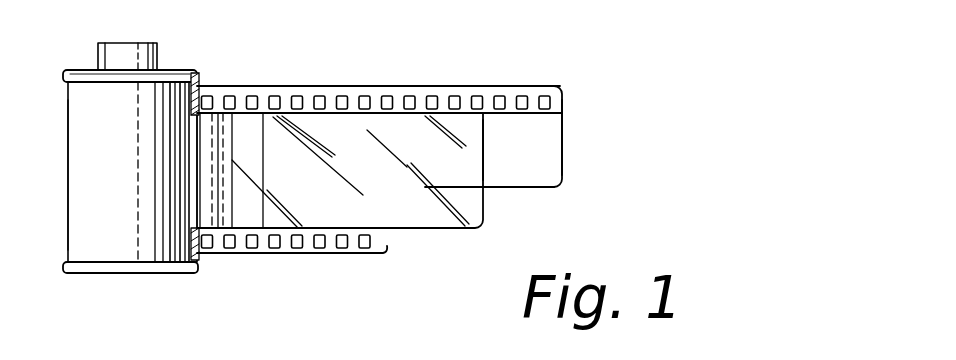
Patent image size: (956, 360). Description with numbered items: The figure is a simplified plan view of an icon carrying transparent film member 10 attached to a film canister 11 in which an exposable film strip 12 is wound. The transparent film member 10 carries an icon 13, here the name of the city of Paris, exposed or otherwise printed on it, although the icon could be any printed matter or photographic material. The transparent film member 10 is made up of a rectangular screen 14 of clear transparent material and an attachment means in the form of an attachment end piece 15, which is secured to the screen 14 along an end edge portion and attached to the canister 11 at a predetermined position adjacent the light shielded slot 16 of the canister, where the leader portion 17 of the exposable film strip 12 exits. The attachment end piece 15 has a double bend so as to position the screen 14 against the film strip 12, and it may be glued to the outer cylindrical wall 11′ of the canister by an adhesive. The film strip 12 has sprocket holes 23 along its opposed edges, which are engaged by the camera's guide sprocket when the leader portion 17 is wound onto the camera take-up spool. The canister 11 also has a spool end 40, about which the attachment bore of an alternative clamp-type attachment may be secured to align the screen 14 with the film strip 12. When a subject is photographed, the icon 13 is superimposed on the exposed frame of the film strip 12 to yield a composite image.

The transparent film member 10 is at (437, 238).
The film canister 11 is at (104, 205).
The outer cylindrical wall 11′ is at (107, 142).
The exposable film strip 12 is at (538, 125).
The icon 13 is at (385, 250).
The rectangular screen 14 is at (447, 152).
The attachment end piece 15 is at (197, 185).
The light shielded slot 16 is at (200, 80).
The leader portion 17 is at (533, 157).
The sprocket holes 23 is at (455, 96).
The spool end 40 is at (147, 54).